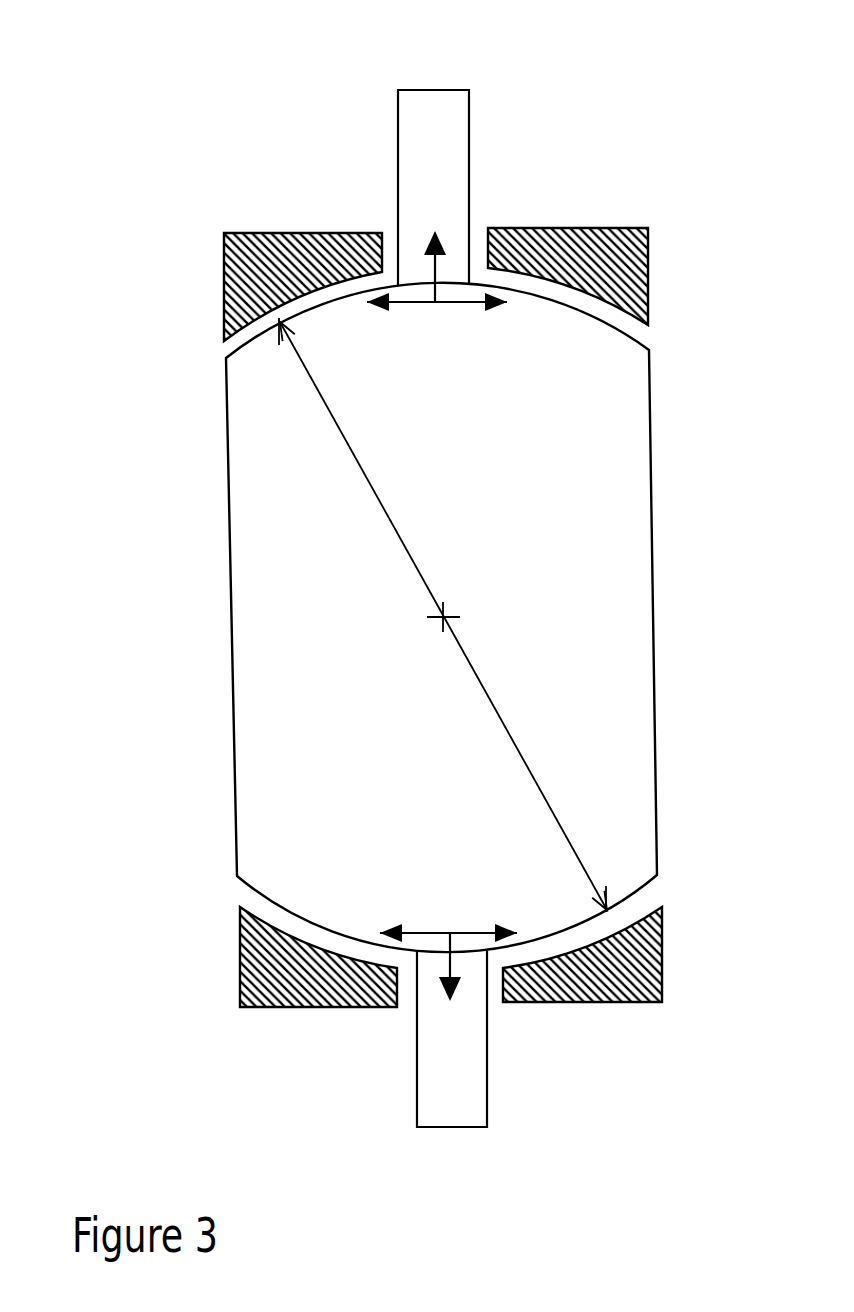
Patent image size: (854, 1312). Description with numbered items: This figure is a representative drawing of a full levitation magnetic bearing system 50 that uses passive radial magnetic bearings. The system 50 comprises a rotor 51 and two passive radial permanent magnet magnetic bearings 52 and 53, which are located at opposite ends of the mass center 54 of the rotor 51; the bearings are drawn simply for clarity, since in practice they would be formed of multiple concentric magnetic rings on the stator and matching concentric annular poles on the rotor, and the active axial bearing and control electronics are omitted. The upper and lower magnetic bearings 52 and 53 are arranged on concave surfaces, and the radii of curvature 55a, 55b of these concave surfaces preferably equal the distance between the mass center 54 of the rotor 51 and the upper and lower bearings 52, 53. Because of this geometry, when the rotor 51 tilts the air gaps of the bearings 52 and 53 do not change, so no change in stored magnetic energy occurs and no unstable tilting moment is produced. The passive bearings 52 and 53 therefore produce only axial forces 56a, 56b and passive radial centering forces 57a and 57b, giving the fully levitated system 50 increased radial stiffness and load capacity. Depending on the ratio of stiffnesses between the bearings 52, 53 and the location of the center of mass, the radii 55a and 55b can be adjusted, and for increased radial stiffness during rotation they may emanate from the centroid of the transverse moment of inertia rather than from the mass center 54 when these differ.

The magnetic bearing system 50 is at (137, 52).
The rotor 51 is at (650, 490).
The upper passive radial permanent magnet magnetic bearing 52 is at (625, 227).
The lower passive radial permanent magnet magnetic bearing 53 is at (662, 960).
The mass center of the rotor 54 is at (452, 610).
The radius of curvature of the upper concave surface 55a is at (390, 520).
The radius of curvature of the lower concave surface 55b is at (517, 747).
The axial force of the upper bearing 56a is at (428, 234).
The axial force of the lower bearing 56b is at (455, 985).
The passive radial centering force of the upper bearing 57a is at (470, 304).
The passive radial centering force of the lower bearing 57b is at (438, 930).